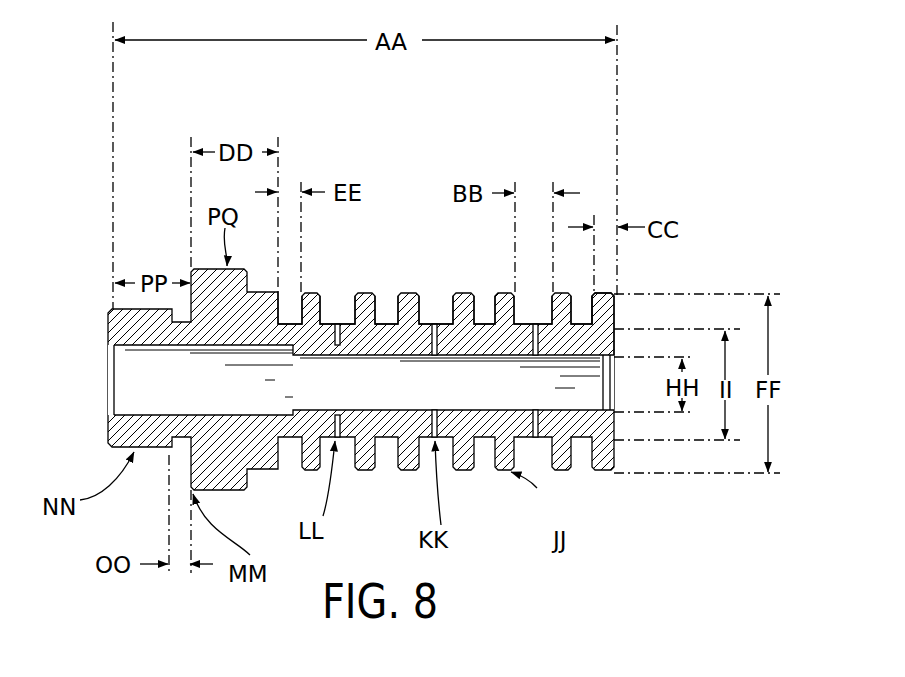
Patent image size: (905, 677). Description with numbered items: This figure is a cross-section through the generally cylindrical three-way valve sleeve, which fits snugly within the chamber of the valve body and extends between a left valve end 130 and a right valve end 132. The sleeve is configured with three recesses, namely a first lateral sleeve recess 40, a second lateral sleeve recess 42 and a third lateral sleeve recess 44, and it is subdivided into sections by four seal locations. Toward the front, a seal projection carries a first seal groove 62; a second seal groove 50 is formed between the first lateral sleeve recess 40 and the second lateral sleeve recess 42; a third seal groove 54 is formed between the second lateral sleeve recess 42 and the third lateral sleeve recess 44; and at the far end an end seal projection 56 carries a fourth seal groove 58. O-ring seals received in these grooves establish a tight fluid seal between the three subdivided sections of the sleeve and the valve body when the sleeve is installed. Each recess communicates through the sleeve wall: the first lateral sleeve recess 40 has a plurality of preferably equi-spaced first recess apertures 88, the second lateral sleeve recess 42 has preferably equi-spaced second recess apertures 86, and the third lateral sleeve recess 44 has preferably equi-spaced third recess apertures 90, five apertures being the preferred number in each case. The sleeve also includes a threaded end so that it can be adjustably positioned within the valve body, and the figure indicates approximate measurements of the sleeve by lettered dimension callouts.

The left valve end 130 is at (111, 126).
The right valve end 132 is at (617, 113).
The first lateral sleeve recess 40 is at (339, 309).
The second lateral sleeve recess 42 is at (433, 303).
The third lateral sleeve recess 44 is at (538, 305).
The second seal groove 50 is at (389, 300).
The third seal groove 54 is at (486, 300).
The end seal projection 56 is at (612, 305).
The fourth seal groove 58 is at (582, 303).
The first seal groove 62 is at (285, 300).
The second recess apertures 86 is at (436, 357).
The first recess apertures 88 is at (334, 356).
The third recess apertures 90 is at (536, 357).